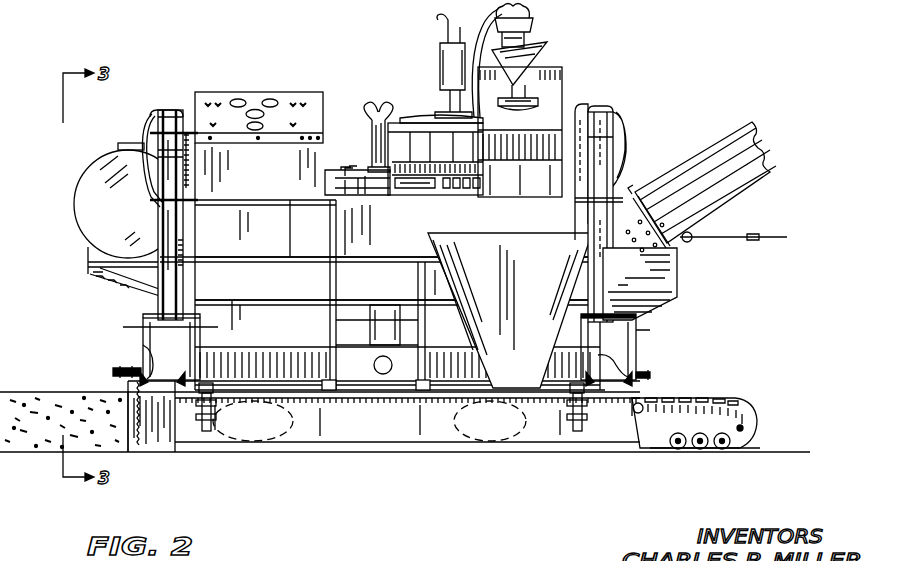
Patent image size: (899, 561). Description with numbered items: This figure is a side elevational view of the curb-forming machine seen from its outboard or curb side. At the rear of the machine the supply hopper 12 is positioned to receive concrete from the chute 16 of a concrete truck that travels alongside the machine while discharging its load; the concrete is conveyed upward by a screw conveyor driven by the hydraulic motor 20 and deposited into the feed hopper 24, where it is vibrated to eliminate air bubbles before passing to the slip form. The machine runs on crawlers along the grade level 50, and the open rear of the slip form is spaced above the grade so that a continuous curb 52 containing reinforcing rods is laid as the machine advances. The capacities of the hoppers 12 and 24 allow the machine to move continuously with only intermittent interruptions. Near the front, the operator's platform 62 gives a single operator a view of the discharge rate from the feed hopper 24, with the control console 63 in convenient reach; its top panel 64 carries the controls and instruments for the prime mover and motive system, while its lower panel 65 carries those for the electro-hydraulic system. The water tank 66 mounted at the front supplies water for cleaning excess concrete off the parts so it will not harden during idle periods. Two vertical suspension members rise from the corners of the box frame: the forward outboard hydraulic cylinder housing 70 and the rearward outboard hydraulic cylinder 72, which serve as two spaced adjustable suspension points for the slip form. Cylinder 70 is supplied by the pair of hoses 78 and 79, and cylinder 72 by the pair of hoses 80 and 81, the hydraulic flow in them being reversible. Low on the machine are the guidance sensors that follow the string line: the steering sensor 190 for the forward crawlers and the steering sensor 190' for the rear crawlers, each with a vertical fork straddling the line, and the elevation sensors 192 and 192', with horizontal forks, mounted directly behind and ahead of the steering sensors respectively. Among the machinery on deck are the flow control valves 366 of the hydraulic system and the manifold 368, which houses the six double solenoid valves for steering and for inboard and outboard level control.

The supply hopper 12 is at (677, 271).
The chute 16 is at (734, 141).
The hydraulic motor 20 is at (538, 62).
The feed hopper 24 is at (488, 249).
The grade level 50 is at (776, 450).
The continuous curb 52 is at (68, 392).
The platform 62 is at (248, 256).
The control console 63 is at (306, 92).
The top panel 64 is at (240, 100).
The lower panel 65 is at (234, 138).
The water tank 66 is at (74, 205).
The forward outboard hydraulic cylinder housing 70 is at (606, 183).
The rearward outboard hydraulic cylinder 72 is at (150, 129).
The hydraulic hose 78 is at (580, 112).
The hydraulic hose 79 is at (619, 114).
The hydraulic hose 80 is at (158, 112).
The hydraulic hose 81 is at (178, 110).
The steering sensor 190 is at (637, 350).
The steering sensor 190' is at (157, 350).
The elevation sensor 192 is at (551, 430).
The elevation sensor 192' is at (232, 430).
The flow control valves 366 is at (361, 150).
The manifold 368 is at (492, 170).